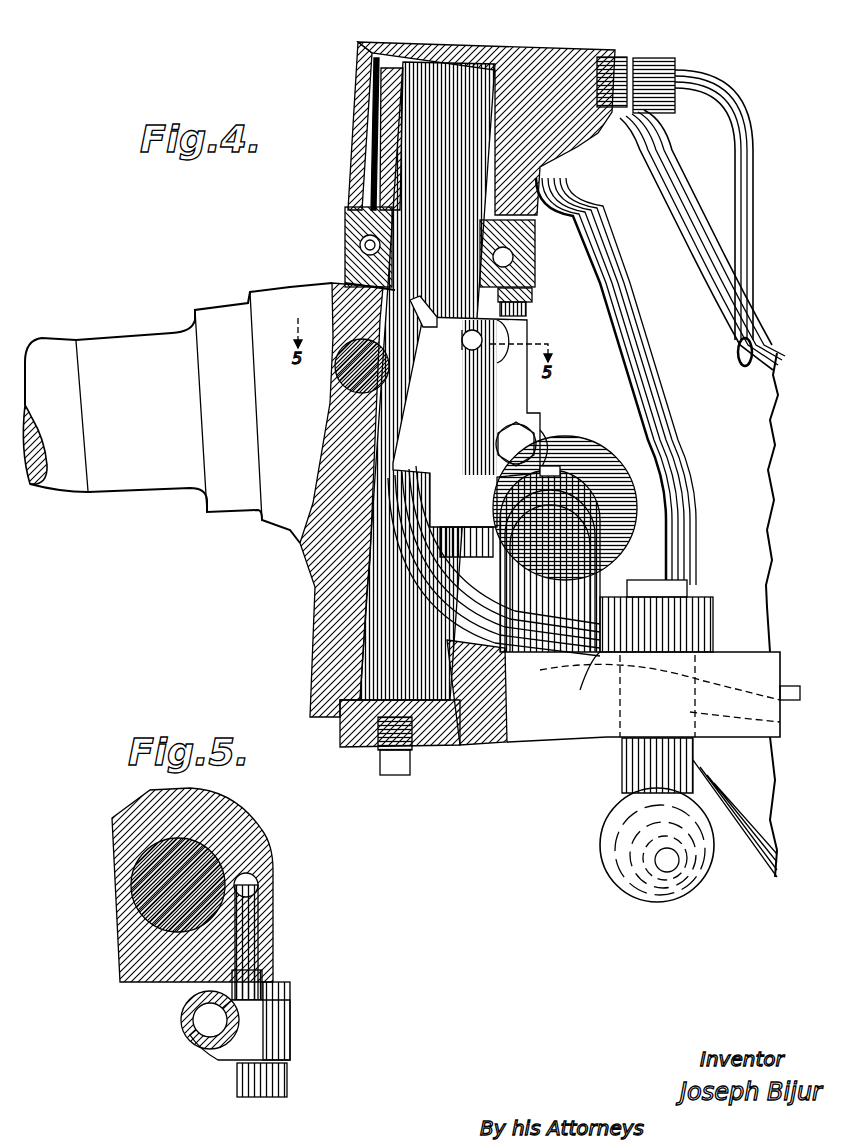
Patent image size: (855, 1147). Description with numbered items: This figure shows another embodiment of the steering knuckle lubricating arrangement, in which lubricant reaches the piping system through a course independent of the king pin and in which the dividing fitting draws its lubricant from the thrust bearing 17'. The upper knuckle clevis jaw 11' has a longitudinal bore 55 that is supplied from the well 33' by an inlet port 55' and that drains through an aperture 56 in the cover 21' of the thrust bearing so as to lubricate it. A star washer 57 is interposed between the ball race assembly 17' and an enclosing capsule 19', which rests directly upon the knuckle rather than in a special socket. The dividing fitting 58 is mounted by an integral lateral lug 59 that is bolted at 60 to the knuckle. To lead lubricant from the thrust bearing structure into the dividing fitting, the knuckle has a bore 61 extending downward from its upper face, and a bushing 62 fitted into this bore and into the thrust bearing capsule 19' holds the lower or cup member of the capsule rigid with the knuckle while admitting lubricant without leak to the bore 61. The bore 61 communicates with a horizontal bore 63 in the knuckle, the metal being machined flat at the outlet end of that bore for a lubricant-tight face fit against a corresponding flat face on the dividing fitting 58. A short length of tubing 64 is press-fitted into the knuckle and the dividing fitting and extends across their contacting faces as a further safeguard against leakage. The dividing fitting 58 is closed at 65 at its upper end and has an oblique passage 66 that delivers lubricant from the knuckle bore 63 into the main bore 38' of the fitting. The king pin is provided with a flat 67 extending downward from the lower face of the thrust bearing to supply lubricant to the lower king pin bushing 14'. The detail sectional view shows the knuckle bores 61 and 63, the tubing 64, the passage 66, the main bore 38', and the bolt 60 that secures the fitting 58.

In FIG. 4, the upper knuckle clevis jaw 11' is at (652, 467).
In FIG. 4, the lower king pin bushing 14' is at (384, 515).
In FIG. 4, the thrust bearing 17' is at (336, 250).
In FIG. 4, the enclosing capsule 19' is at (538, 292).
In FIG. 4, the cover of the thrust bearing 21' is at (616, 381).
In FIG. 4, the well 33' is at (427, 355).
In FIG. 5, the main bore 38' is at (197, 1055).
In FIG. 4, the longitudinal bore 55 is at (339, 134).
In FIG. 4, the inlet port 55' is at (353, 134).
In FIG. 4, the aperture 56 is at (366, 215).
In FIG. 4, the star washer 57 is at (338, 292).
In FIG. 4, the dividing fitting 58 is at (490, 383).
In FIG. 5, the dividing fitting 58 is at (223, 992).
In FIG. 4, the lateral lug 59 is at (530, 424).
In FIG. 4, the bolt 60 is at (527, 447).
In FIG. 5, the bolt 60 is at (272, 1081).
In FIG. 4, the bore 61 is at (530, 315).
In FIG. 5, the bore 61 is at (250, 886).
In FIG. 4, the bushing 62 is at (530, 308).
In FIG. 5, the horizontal bore 63 is at (248, 930).
In FIG. 5, the tubing 64 is at (250, 983).
In FIG. 4, the closed upper end 65 is at (455, 313).
In FIG. 5, the oblique passage 66 is at (262, 1014).
In FIG. 4, the flat 67 is at (508, 287).